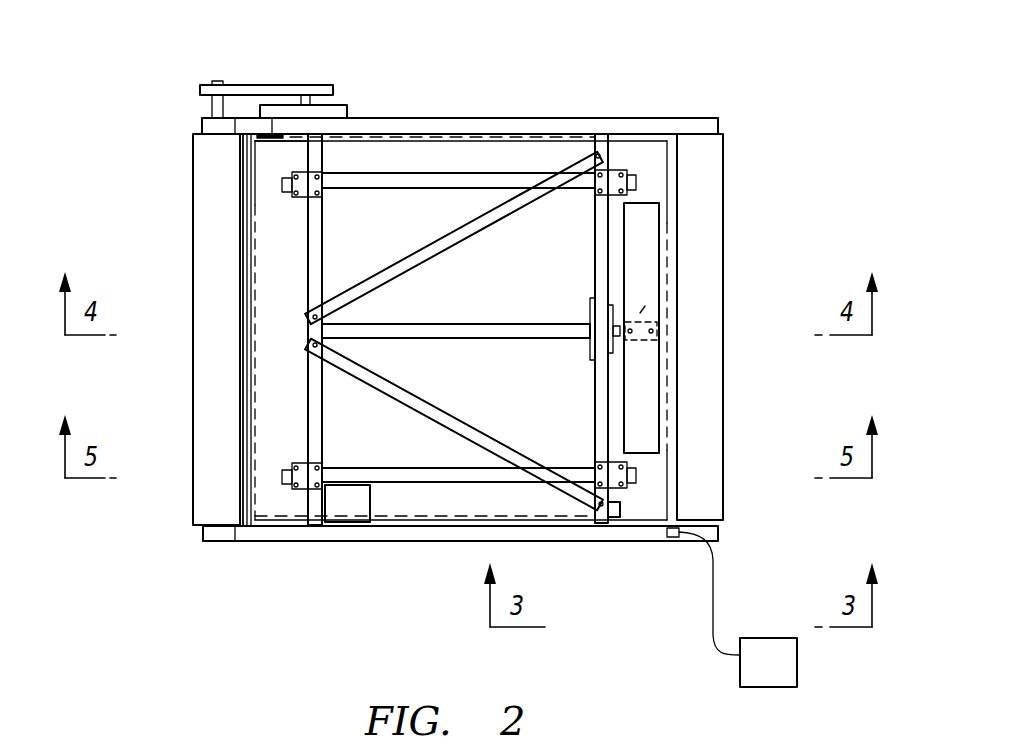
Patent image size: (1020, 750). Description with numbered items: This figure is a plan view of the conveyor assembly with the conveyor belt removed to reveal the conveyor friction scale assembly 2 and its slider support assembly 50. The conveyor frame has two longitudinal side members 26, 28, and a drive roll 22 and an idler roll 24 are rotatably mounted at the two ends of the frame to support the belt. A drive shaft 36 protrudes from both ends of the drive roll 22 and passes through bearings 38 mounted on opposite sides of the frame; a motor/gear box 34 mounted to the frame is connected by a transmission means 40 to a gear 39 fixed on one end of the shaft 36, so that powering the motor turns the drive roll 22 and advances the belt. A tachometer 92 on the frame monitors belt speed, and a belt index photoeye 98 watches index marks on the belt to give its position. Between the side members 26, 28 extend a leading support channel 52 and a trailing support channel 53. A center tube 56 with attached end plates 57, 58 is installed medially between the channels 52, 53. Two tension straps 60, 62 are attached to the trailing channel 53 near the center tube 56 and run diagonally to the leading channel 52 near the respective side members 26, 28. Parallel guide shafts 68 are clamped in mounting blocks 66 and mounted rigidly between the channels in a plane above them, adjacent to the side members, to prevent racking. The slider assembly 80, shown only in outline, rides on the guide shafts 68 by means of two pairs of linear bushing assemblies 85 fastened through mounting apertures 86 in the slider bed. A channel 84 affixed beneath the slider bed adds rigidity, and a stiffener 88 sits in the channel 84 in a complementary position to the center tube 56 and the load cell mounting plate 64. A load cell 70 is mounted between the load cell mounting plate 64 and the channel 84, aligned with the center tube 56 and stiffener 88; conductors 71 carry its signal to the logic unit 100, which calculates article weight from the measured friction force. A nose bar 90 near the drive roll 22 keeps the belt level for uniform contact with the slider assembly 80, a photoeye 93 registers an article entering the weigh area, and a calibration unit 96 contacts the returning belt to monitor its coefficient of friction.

The conveyor friction scale assembly 2 is at (240, 395).
The drive roll 22 is at (195, 255).
The idler roll 24 is at (723, 228).
The side member 26 is at (345, 541).
The side member 28 is at (612, 118).
The motor/gear box 34 is at (343, 110).
The drive shaft 36 is at (213, 105).
The bearings 38 is at (205, 128).
The gear 39 is at (232, 81).
The transmission means 40 is at (257, 85).
The slider support assembly 50 is at (303, 516).
The leading support channel 52 is at (592, 252).
The trailing support channel 53 is at (323, 150).
The center tube 56 is at (475, 340).
The end plate 57 is at (590, 348).
The end plate 58 is at (325, 302).
The tension strap 60 is at (560, 498).
The tension strap 62 is at (568, 162).
The load cell mounting plate 64 is at (606, 305).
The mounting blocks 66 is at (322, 188).
The guide shafts 68 is at (463, 176).
The load cell 70 is at (613, 345).
The conductors 71 is at (712, 615).
The slider assembly 80 is at (672, 222).
The channel 84 is at (648, 255).
The linear bushing assemblies 85 is at (292, 194).
The mounting apertures 86 is at (283, 182).
The stiffener 88 is at (657, 302).
The nose bar 90 is at (247, 330).
The tachometer 92 is at (272, 120).
The photoeye 93 is at (676, 537).
The calibration unit 96 is at (350, 507).
The belt index photoeye 98 is at (620, 512).
The logic unit 100 is at (798, 675).